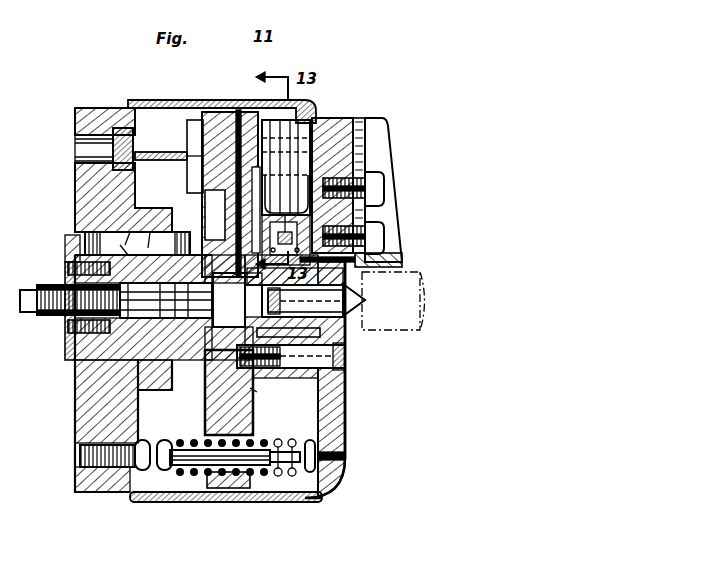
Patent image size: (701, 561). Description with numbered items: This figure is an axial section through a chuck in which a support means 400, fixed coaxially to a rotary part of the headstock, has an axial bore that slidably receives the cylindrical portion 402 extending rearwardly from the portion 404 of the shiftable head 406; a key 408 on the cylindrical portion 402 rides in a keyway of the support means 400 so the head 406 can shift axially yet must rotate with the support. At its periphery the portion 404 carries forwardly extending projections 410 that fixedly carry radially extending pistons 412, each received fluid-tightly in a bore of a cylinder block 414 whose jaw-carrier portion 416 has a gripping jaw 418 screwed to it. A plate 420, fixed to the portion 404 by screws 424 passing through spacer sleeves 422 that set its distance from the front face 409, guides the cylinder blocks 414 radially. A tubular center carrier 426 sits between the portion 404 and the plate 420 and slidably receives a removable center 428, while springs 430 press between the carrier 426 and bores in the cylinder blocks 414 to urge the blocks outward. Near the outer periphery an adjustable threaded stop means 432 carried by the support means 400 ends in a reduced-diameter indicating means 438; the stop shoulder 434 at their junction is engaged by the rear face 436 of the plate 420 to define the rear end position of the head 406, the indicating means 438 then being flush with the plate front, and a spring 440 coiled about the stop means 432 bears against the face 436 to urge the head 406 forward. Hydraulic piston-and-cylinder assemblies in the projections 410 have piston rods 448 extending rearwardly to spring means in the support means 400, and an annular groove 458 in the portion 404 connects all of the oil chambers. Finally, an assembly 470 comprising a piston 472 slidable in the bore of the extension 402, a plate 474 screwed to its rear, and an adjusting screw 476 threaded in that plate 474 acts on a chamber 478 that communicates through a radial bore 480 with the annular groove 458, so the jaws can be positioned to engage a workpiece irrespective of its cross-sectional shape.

The support means 400 is at (90, 186).
The cylindrical portion 402 is at (75, 365).
The portion of the shiftable head 404 is at (245, 405).
The shiftable head 406 is at (352, 427).
The key 408 is at (110, 240).
The front face 409 is at (257, 392).
The projections 410 is at (345, 113).
The pistons 412 is at (353, 160).
The cylinder blocks 414 is at (386, 192).
The jaw-carrier portions 416 is at (367, 217).
The gripping jaws 418 is at (355, 213).
The plate 420 is at (340, 397).
The spacer sleeves 422 is at (347, 413).
The screws 424 is at (347, 358).
The tubular center carrier 426 is at (347, 332).
The center 428 is at (372, 293).
The springs 430 is at (400, 258).
The stop means 432 is at (178, 478).
The stop shoulder 434 is at (245, 475).
The rear face 436 is at (315, 478).
The indicating means 438 is at (290, 472).
The spring 440 is at (203, 472).
The piston rods 448 is at (162, 155).
The annular groove 458 is at (243, 96).
The assembly 470 is at (57, 268).
The piston 472 is at (152, 303).
The plate 474 is at (65, 355).
The adjusting screw 476 is at (47, 283).
The chamber 478 is at (223, 310).
The radial bore 480 is at (200, 118).